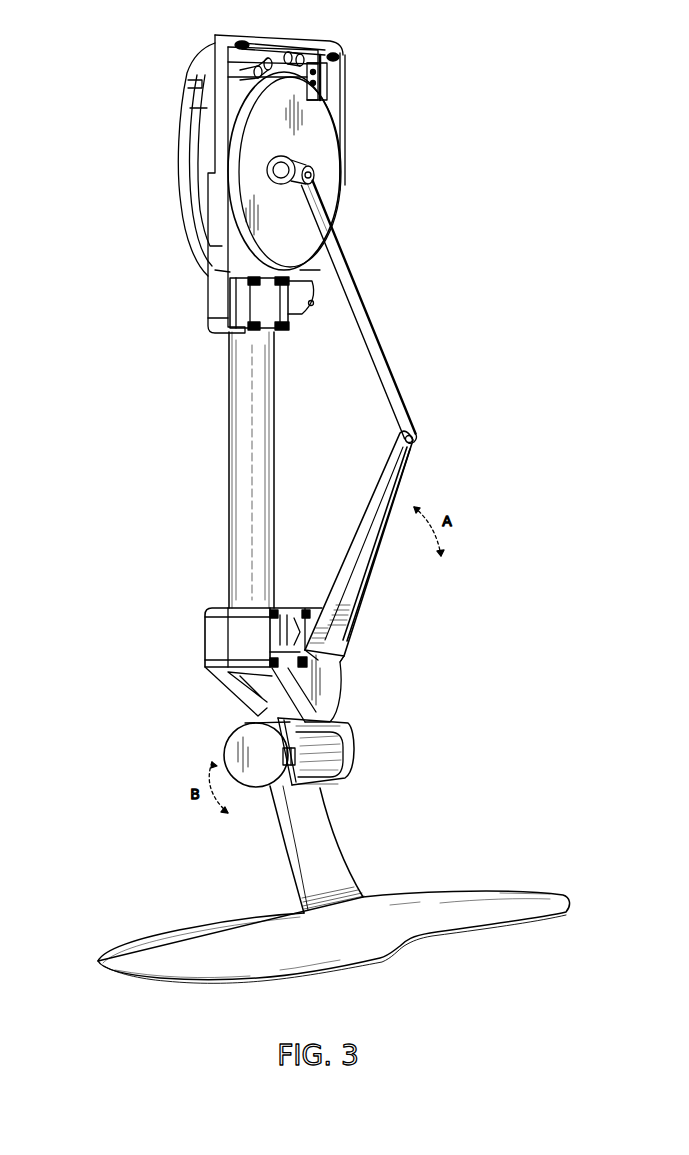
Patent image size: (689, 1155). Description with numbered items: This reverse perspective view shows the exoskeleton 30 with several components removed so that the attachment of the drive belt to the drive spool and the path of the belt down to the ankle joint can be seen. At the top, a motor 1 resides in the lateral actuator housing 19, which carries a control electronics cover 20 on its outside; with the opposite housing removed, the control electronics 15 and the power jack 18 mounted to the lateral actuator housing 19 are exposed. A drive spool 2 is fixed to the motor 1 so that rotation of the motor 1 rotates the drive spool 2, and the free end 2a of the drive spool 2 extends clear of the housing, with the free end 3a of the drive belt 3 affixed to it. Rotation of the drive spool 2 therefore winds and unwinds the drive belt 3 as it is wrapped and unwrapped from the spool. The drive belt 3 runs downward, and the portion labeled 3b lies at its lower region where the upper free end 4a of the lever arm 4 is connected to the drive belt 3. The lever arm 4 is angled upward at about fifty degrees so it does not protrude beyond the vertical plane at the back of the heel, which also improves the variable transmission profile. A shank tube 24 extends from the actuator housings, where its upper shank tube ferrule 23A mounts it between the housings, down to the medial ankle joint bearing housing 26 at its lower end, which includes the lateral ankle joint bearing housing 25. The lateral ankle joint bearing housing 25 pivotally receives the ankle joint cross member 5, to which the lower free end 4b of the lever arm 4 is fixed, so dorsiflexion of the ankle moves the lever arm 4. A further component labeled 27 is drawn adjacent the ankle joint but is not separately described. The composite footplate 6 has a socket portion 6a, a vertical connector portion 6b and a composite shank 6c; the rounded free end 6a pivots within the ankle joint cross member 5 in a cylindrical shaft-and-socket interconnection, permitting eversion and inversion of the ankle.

The motor 1 is at (327, 195).
The drive spool 2 is at (325, 155).
The free end of drive spool 2a is at (322, 173).
The drive belt 3 is at (394, 370).
The free end of drive belt 3a is at (323, 224).
The lower end of connecting rod 3b is at (406, 428).
The lever arm 4 is at (379, 584).
The upper free end of lever arm 4a is at (412, 446).
The lower free end of lever arm 4b is at (340, 650).
The ankle joint cross member 5 is at (352, 733).
The composite footplate 6 is at (412, 945).
The socket portion 6a is at (327, 753).
The vertical connector portion 6b is at (328, 857).
The composite shank 6c is at (533, 902).
The control electronics 15 is at (281, 58).
The power jack 18 is at (333, 84).
The lateral actuator housing 19 is at (205, 213).
The control electronics cover 20 is at (185, 172).
The upper shank tube ferrule 23A is at (233, 310).
The shank tube 24 is at (242, 405).
The lateral ankle joint bearing housing 25 is at (213, 640).
The medial ankle joint bearing housing 26 is at (330, 685).
The roller 27 is at (240, 741).
The exoskeleton 30 is at (172, 510).